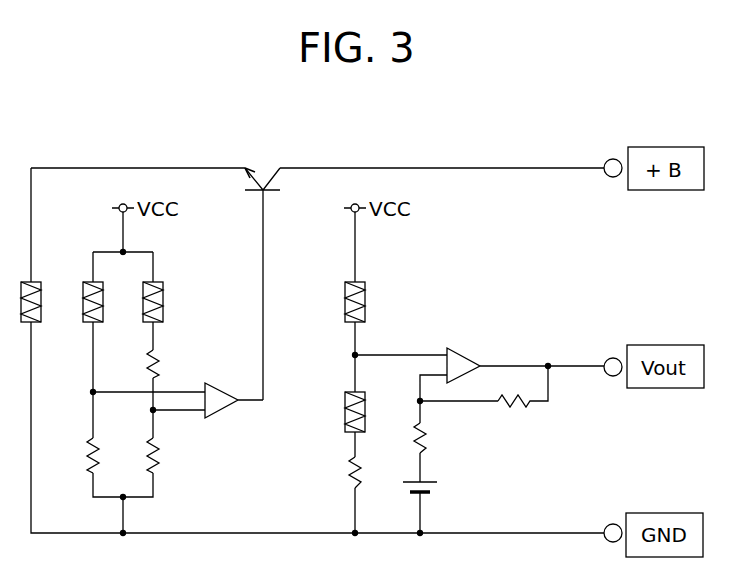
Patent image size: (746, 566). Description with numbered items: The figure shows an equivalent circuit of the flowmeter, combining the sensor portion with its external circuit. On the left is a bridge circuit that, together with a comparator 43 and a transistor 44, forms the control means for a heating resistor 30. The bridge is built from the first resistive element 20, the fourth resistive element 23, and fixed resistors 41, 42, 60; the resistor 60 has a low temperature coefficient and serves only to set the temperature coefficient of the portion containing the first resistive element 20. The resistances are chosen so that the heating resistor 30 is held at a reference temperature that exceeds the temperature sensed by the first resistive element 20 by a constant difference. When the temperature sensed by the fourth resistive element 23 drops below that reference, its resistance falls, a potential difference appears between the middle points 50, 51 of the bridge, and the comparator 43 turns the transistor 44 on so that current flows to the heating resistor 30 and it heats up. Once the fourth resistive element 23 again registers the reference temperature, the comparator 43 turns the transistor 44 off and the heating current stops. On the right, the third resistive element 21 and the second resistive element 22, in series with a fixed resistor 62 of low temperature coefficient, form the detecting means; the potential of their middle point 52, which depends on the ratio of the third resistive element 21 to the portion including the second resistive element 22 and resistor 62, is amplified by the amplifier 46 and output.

The first resistive element 20 is at (160, 291).
The third resistive element 21 is at (362, 288).
The second resistive element 22 is at (362, 397).
The fourth resistive element 23 is at (99, 291).
The heating resistor 30 is at (36, 290).
The fixed resistor 41 is at (160, 445).
The fixed resistor 42 is at (92, 445).
The comparator 43 is at (213, 385).
The transistor 44 is at (278, 192).
The amplifier 46 is at (466, 352).
The middle point 50 is at (92, 390).
The middle point 51 is at (152, 410).
The middle point 52 is at (358, 352).
The fixed resistor 60 is at (160, 352).
The fixed resistor 62 is at (360, 468).